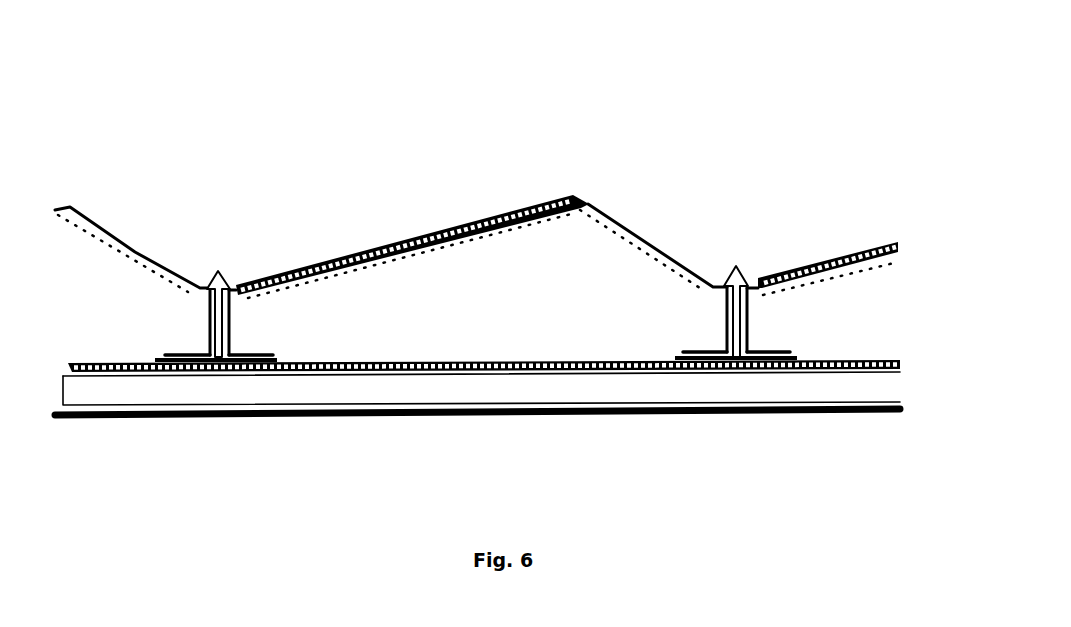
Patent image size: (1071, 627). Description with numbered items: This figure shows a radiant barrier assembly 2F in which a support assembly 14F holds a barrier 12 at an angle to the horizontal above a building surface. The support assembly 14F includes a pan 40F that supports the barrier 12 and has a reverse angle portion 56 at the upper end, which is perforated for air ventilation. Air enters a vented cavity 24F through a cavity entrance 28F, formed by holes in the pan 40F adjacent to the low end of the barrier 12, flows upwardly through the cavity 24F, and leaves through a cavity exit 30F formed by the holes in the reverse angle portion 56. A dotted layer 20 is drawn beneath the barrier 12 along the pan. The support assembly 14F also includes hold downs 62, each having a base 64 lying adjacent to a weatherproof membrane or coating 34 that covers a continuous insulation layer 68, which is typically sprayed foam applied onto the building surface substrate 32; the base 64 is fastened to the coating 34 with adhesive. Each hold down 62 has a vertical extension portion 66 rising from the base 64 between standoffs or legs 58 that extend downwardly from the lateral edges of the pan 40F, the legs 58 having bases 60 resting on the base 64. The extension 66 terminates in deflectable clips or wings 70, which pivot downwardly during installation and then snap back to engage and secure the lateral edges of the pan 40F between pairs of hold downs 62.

The assembly 2F is at (565, 83).
The barrier 12 is at (450, 228).
The support assembly 14F is at (650, 222).
The underlayment layer 20 is at (548, 211).
The vented cavity 24F is at (480, 297).
The cavity entrance 28F is at (237, 289).
The cavity exit 30F is at (592, 205).
The building surface substrate 32 is at (900, 409).
The membrane or coating 34 is at (900, 362).
The pan 40F is at (605, 218).
The reverse angle portion 56 is at (597, 208).
The standoffs or legs 58 is at (208, 323).
The bases 60 is at (267, 350).
The hold down 62 is at (738, 262).
The base 64 is at (793, 355).
The vertical extension portion 66 is at (741, 321).
The continuous insulation layer 68 is at (410, 387).
The deflectable clips or wings 70 is at (208, 283).